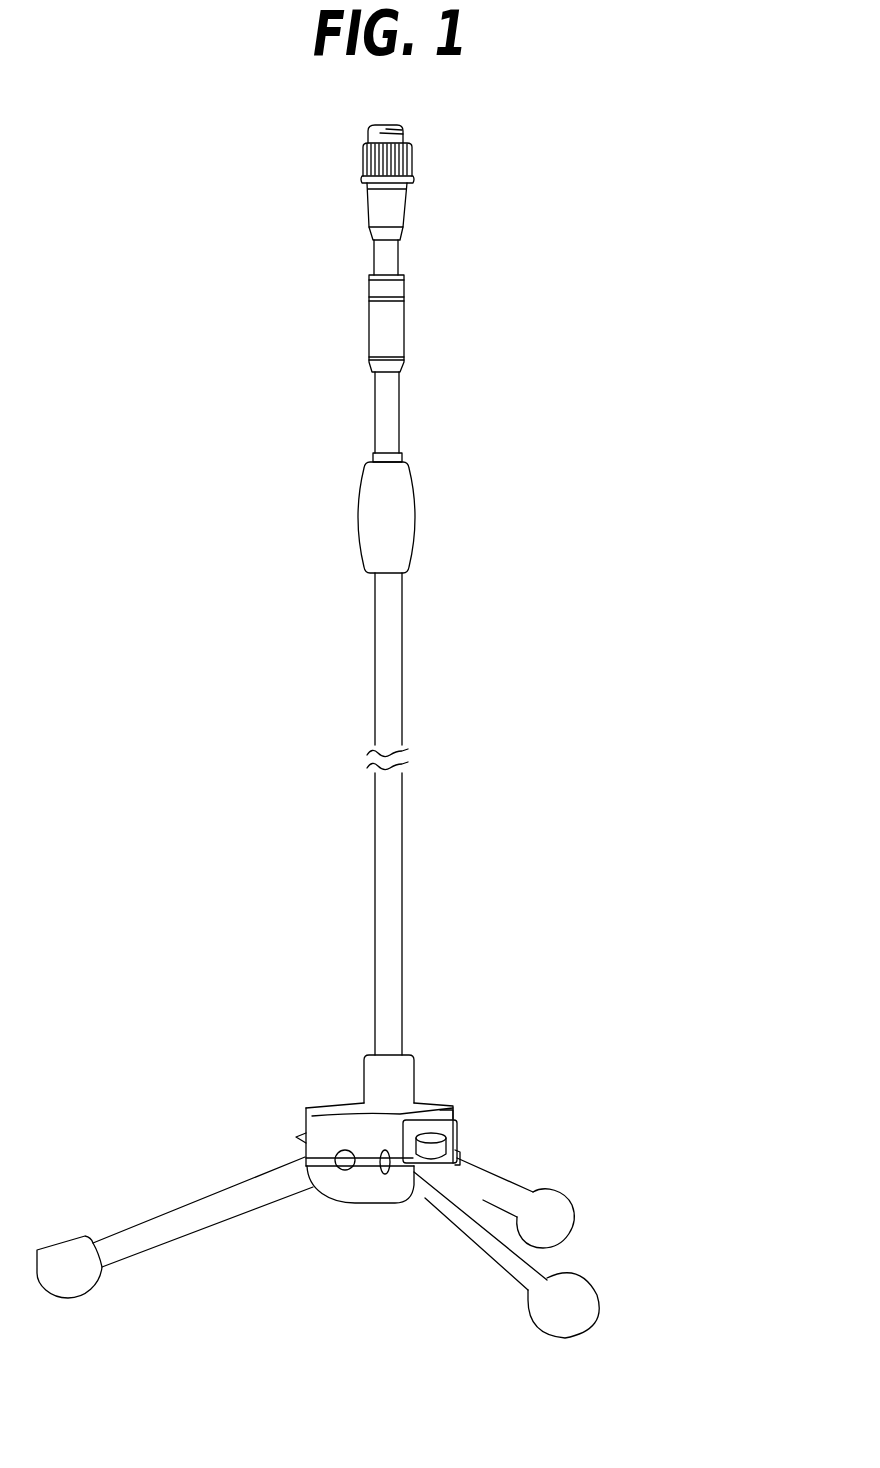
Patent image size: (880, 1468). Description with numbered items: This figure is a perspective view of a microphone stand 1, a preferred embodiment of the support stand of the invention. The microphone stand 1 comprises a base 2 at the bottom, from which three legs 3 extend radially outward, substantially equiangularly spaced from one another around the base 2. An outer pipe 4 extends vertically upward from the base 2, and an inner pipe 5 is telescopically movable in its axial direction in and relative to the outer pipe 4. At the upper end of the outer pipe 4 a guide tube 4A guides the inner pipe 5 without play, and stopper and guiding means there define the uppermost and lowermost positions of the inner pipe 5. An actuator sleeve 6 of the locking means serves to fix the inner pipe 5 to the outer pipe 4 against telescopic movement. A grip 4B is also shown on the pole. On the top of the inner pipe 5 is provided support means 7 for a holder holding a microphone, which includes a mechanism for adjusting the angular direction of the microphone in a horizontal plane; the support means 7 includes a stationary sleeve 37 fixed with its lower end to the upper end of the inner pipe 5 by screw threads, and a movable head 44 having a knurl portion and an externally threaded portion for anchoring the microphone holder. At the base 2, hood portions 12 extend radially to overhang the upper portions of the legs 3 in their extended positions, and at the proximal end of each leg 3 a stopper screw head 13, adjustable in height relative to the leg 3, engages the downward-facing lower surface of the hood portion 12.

The microphone stand 1 is at (333, 674).
The base 2 is at (333, 1100).
The legs 3 is at (192, 1212).
The outer pipe 4 is at (375, 915).
The guide tube 4A is at (402, 457).
The grip 4B is at (422, 521).
The inner pipe 5 is at (392, 260).
The actuator sleeve 6 is at (356, 333).
The support means 7 is at (362, 163).
The hood portions 12 is at (428, 1130).
The stopper screw head 13 is at (455, 1137).
The stationary sleeve 37 is at (393, 203).
The movable head 44 is at (407, 150).